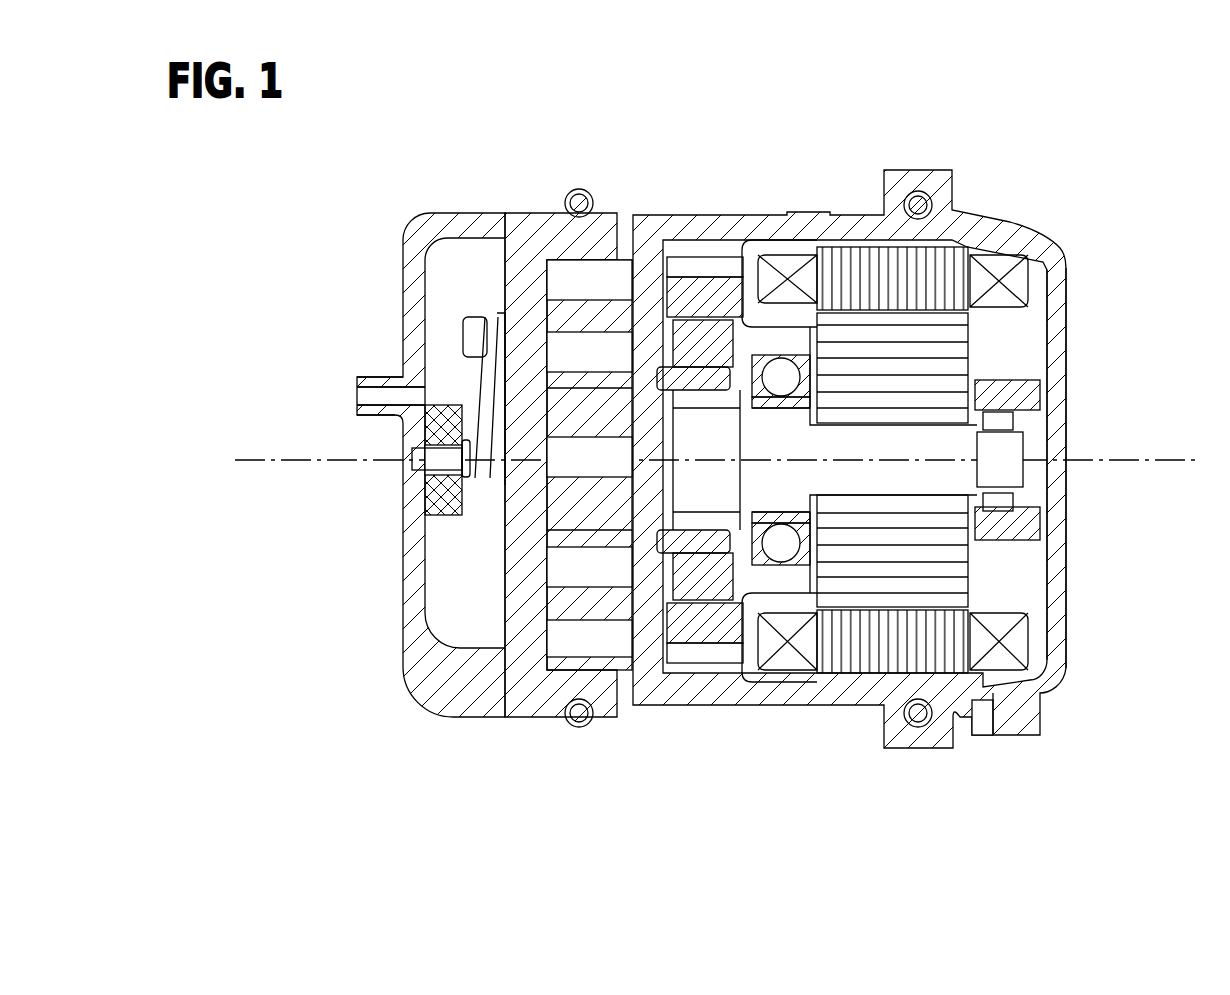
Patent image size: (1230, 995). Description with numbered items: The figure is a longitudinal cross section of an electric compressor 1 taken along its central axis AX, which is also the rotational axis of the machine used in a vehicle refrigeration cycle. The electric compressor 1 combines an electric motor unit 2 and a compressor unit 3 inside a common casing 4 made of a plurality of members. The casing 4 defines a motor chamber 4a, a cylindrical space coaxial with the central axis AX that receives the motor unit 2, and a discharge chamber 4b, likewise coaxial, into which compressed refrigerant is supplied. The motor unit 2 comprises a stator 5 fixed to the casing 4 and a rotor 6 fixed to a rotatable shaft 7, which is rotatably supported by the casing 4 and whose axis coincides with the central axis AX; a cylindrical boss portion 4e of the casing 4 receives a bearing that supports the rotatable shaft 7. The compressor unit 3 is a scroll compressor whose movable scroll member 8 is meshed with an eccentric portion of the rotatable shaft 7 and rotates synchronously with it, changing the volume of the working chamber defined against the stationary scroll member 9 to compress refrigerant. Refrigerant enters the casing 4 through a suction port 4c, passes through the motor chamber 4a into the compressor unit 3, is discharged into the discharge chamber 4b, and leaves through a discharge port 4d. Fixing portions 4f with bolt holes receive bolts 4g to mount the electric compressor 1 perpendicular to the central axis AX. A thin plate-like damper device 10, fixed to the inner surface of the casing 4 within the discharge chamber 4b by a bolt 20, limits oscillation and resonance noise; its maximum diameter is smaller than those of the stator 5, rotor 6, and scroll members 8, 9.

The electric compressor 1 is at (1063, 205).
The electric motor unit 2 is at (970, 203).
The compressor unit 3 is at (640, 215).
The casing 4 is at (840, 230).
The motor chamber 4a is at (1035, 285).
The discharge chamber 4b is at (462, 278).
The suction port 4c is at (1030, 715).
The discharge port 4d is at (360, 377).
The boss portion 4e is at (1035, 520).
The fixing portion 4f is at (578, 195).
The bolt 4g is at (565, 195).
The stator 5 is at (870, 290).
The rotor 6 is at (915, 350).
The rotatable shaft 7 is at (863, 467).
The movable scroll member 8 is at (653, 580).
The stationary scroll member 9 is at (533, 633).
The damper device 10 is at (447, 398).
The bolt 20 is at (420, 455).
The central axis AX is at (1110, 460).